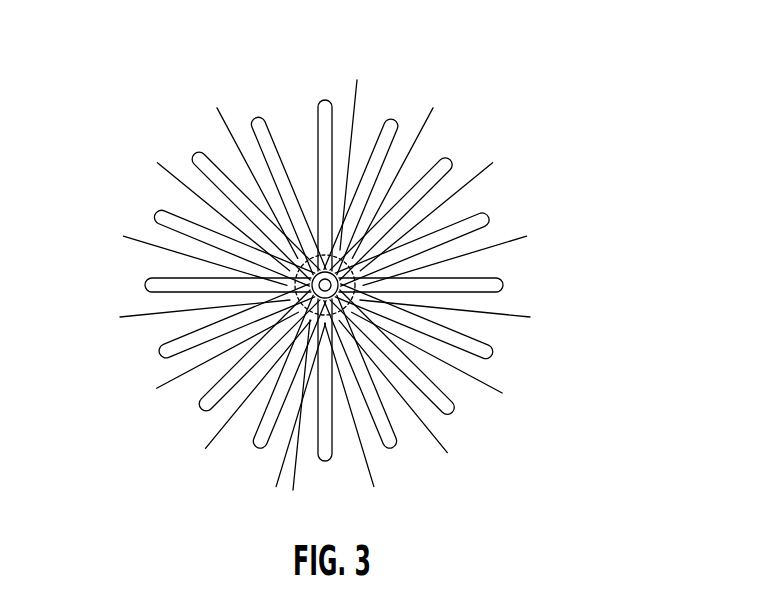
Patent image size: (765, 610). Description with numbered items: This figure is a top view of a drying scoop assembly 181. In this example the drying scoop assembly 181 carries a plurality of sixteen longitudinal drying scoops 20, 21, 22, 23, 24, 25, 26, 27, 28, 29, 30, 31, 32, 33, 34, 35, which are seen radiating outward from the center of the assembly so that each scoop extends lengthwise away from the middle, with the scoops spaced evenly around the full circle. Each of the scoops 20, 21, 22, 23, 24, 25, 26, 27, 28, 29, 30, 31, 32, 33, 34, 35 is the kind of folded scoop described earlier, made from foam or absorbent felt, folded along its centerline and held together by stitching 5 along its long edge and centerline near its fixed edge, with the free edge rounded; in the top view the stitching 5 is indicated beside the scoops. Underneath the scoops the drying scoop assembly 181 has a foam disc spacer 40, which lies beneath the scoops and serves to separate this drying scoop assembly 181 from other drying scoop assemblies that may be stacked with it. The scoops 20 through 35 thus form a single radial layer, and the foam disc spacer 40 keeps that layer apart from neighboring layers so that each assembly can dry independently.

The drying scoop assembly 181 is at (510, 108).
The longitudinal drying scoop 20 is at (491, 214).
The longitudinal drying scoop 21 is at (506, 281).
The longitudinal drying scoop 22 is at (494, 354).
The longitudinal drying scoop 23 is at (454, 414).
The longitudinal drying scoop 24 is at (393, 450).
The longitudinal drying scoop 25 is at (326, 464).
The longitudinal drying scoop 26 is at (258, 450).
The longitudinal drying scoop 27 is at (202, 410).
The longitudinal drying scoop 28 is at (161, 352).
The longitudinal drying scoop 29 is at (146, 282).
The longitudinal drying scoop 30 is at (157, 213).
The longitudinal drying scoop 31 is at (196, 152).
The longitudinal drying scoop 32 is at (257, 115).
The longitudinal drying scoop 33 is at (329, 100).
The longitudinal drying scoop 34 is at (396, 116).
The longitudinal drying scoop 35 is at (453, 158).
The foam disc spacer 40 is at (186, 184).
The stitching 5 is at (204, 449).